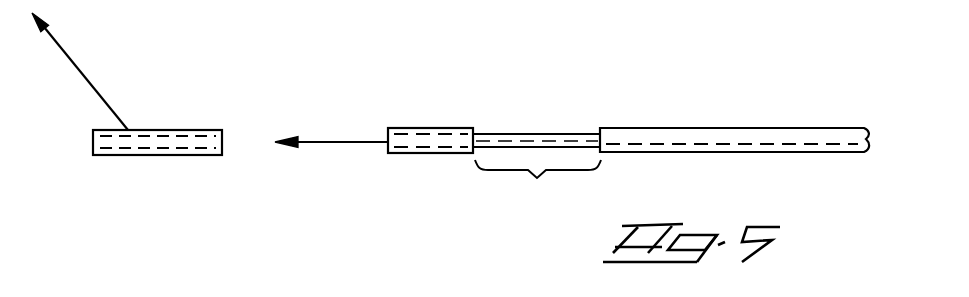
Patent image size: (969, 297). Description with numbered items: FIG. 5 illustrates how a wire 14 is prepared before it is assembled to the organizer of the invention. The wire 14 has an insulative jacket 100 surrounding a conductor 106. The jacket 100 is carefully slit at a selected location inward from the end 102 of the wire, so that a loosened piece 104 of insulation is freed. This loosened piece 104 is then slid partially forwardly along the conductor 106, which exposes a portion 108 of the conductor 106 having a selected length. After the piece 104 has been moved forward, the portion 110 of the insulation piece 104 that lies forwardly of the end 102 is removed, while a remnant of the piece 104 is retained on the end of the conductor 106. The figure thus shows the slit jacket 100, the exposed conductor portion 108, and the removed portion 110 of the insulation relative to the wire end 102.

The wire 14 is at (705, 108).
The insulative jacket 100 is at (597, 138).
The end 102 is at (386, 148).
The loosened piece 104 is at (462, 128).
The conductor 106 is at (548, 135).
The exposed portion of conductor 108 is at (538, 187).
The removed portion of insulation piece 110 is at (193, 130).